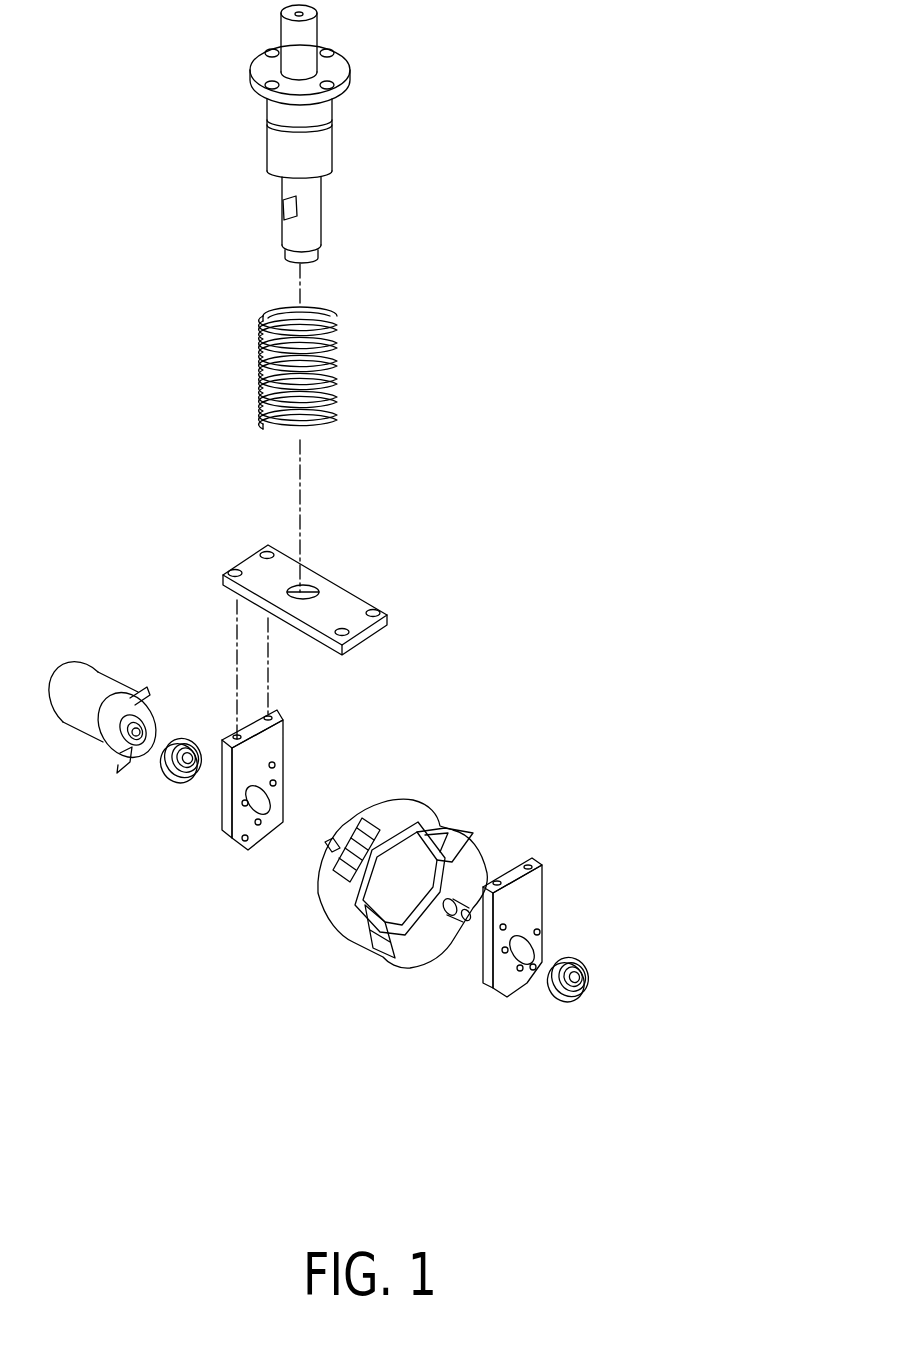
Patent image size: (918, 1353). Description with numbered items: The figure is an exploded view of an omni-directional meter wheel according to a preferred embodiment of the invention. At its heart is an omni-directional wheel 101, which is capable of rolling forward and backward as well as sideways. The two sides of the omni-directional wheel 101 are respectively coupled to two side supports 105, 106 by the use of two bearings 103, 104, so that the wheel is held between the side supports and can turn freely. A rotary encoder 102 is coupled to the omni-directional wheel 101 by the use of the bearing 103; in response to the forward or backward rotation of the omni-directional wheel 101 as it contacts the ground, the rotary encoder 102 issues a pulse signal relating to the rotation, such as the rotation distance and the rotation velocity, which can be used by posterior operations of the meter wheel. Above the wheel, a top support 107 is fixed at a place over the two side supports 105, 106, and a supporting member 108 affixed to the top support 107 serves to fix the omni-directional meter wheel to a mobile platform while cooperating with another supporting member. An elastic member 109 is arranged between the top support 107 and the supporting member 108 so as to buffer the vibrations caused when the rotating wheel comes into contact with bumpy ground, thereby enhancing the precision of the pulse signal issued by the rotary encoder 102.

The omni-directional wheel 101 is at (343, 940).
The rotary encoder 102 is at (72, 740).
The bearing 103 is at (168, 775).
The bearing 104 is at (553, 997).
The side support 105 is at (227, 845).
The side support 106 is at (487, 990).
The top support 107 is at (367, 600).
The supporting member 108 is at (327, 155).
The elastic member 109 is at (337, 368).